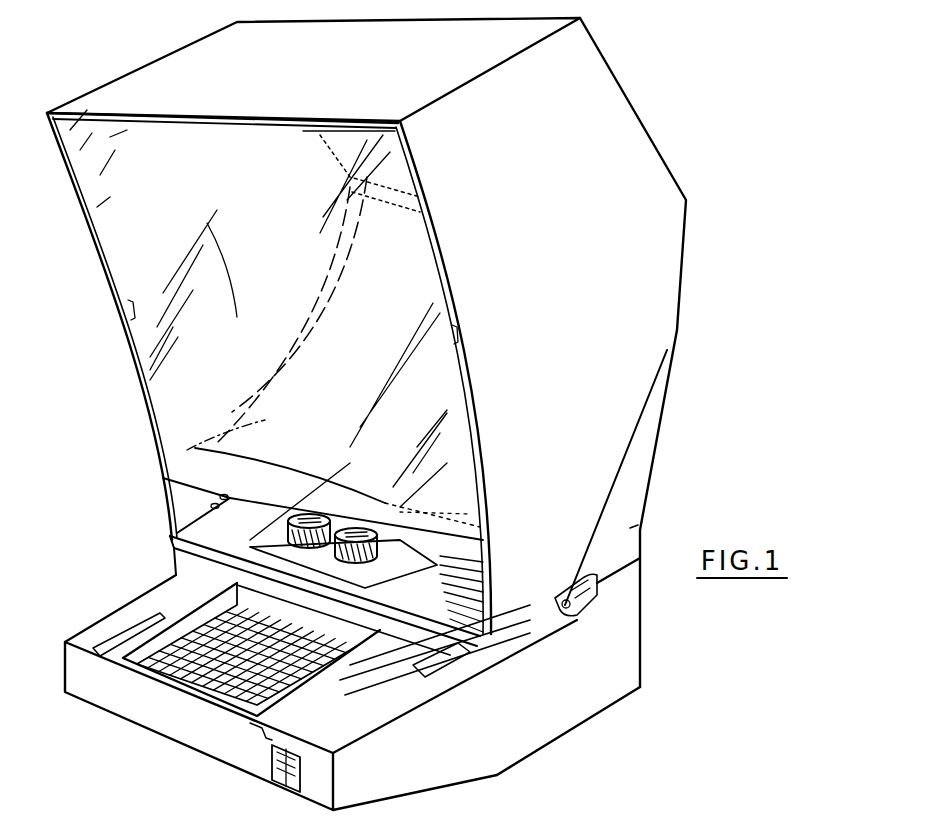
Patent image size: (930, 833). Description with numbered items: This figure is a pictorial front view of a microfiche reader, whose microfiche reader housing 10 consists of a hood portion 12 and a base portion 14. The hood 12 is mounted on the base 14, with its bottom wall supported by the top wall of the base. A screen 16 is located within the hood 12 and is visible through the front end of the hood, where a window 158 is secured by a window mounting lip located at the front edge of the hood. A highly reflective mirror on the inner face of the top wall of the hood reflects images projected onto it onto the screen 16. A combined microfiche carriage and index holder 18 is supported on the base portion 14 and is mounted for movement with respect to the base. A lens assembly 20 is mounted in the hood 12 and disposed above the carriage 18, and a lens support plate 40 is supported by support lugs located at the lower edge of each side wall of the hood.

The microfiche reader housing 10 is at (668, 142).
The hood portion 12 is at (665, 273).
The base portion 14 is at (607, 675).
The screen 16 is at (258, 437).
The combined microfiche carriage and index holder 18 is at (188, 608).
The lens assembly 20 is at (213, 555).
The lens support plate 40 is at (458, 597).
The window 158 is at (148, 268).